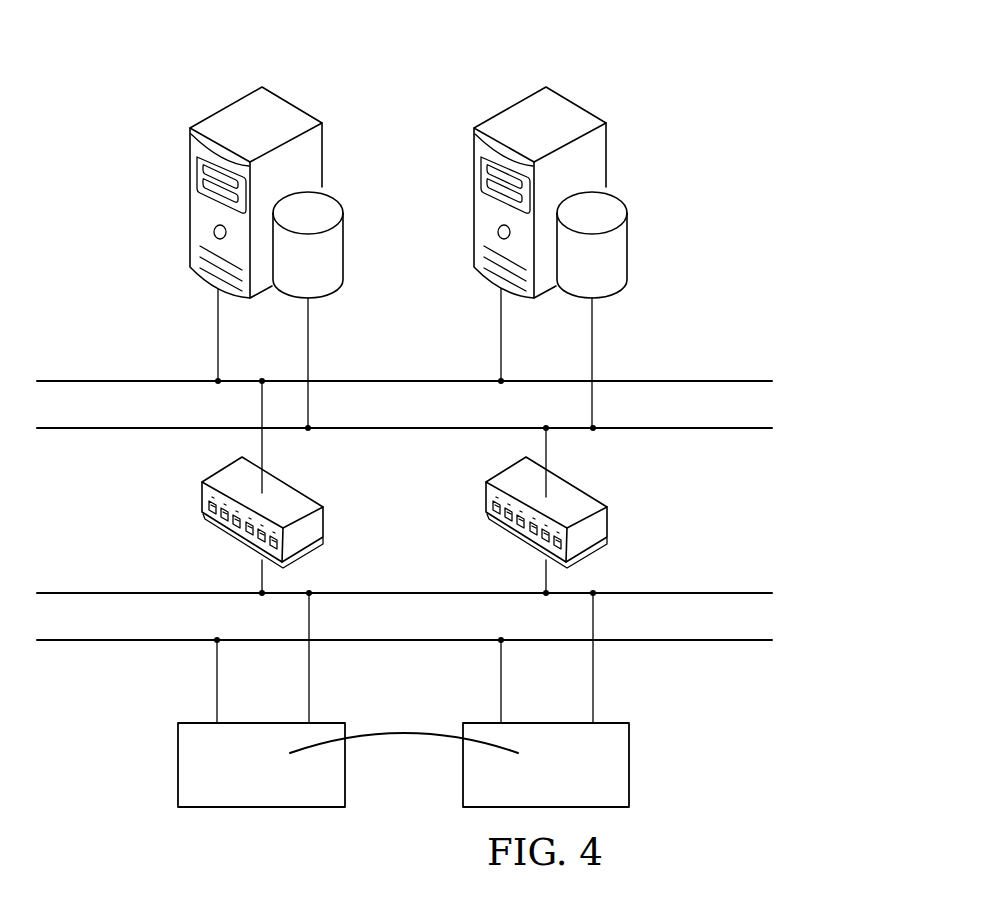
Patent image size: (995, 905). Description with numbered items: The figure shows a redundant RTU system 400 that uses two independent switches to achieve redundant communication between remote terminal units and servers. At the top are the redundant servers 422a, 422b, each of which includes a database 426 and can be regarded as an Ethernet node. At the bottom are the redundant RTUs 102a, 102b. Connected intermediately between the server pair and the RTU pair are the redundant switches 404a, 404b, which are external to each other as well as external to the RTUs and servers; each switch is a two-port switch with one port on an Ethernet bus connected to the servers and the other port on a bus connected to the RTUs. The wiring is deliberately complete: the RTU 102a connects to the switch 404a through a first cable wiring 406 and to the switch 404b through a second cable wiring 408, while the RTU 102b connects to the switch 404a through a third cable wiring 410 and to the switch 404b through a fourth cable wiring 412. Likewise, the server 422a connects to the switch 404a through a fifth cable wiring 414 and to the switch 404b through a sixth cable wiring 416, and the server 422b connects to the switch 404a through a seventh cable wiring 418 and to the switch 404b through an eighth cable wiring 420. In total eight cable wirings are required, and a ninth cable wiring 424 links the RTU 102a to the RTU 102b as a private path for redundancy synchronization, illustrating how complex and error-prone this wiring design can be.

The redundant RTU system 400 is at (627, 64).
The redundant server 422a is at (190, 195).
The redundant server 422b is at (607, 152).
The database 426 is at (345, 250).
The fifth cable wiring 414 is at (216, 333).
The sixth cable wiring 416 is at (310, 340).
The seventh cable wiring 418 is at (499, 333).
The eighth cable wiring 420 is at (594, 340).
The redundant switch 404a is at (202, 497).
The redundant switch 404b is at (608, 520).
The first cable wiring 406 is at (219, 682).
The second cable wiring 408 is at (311, 684).
The third cable wiring 410 is at (499, 682).
The fourth cable wiring 412 is at (595, 684).
The redundant RTU 102a is at (177, 766).
The redundant RTU 102b is at (630, 766).
The ninth cable wiring 424 is at (404, 740).